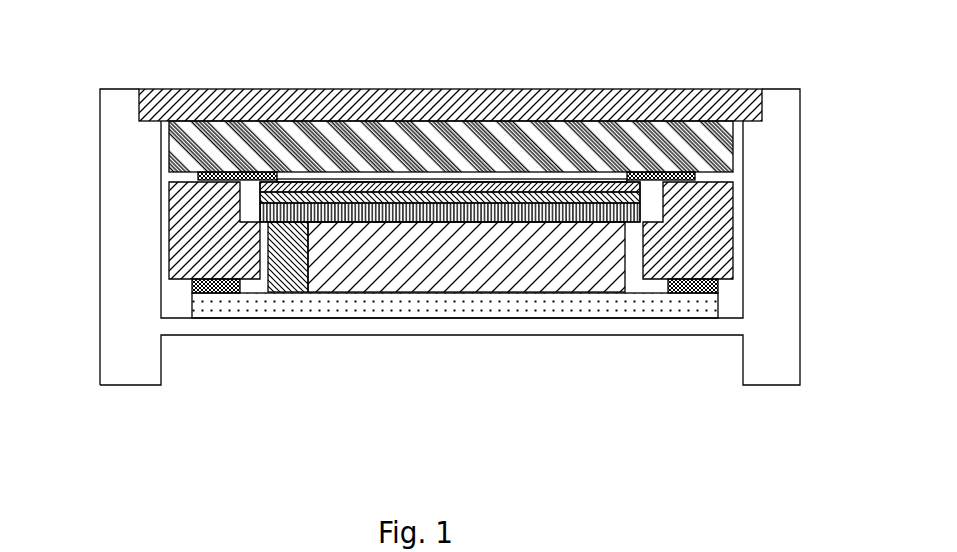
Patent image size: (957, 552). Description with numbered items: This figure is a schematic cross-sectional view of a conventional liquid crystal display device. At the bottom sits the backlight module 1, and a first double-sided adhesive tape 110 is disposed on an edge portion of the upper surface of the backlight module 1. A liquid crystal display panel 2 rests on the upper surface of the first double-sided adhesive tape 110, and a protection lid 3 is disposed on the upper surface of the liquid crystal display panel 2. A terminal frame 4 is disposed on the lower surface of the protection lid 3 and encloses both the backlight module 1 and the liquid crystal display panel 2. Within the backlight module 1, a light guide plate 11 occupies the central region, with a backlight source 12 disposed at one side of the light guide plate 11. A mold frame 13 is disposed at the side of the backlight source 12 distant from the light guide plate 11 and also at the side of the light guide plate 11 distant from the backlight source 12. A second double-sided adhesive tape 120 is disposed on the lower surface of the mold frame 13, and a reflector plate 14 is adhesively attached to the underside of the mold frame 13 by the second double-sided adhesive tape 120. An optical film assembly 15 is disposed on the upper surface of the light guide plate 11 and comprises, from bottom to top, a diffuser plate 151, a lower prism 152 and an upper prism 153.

The backlight module 1 is at (451, 250).
The liquid crystal display panel 2 is at (238, 148).
The protection lid 3 is at (368, 98).
The terminal frame 4 is at (115, 285).
The light guide plate 11 is at (423, 272).
The backlight source 12 is at (293, 275).
The mold frame 13 is at (247, 255).
The reflector plate 14 is at (363, 302).
The optical film assembly 15 is at (471, 216).
The first double-sided adhesive tape 110 is at (695, 178).
The second double-sided adhesive tape 120 is at (217, 293).
The diffuser plate 151 is at (578, 197).
The lower prism 152 is at (510, 197).
The upper prism 153 is at (468, 186).